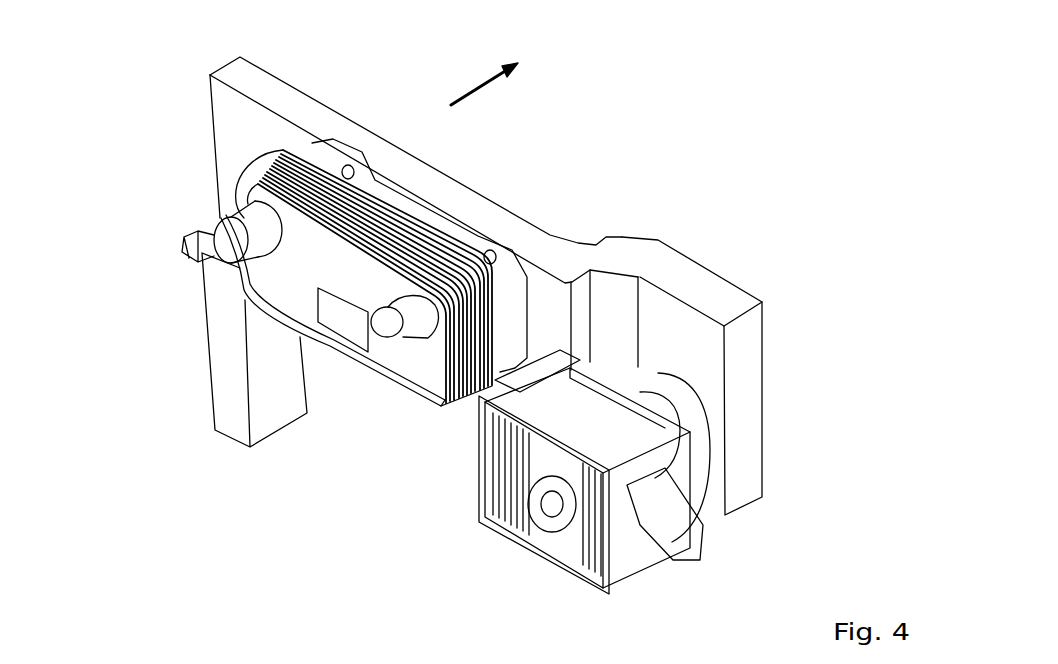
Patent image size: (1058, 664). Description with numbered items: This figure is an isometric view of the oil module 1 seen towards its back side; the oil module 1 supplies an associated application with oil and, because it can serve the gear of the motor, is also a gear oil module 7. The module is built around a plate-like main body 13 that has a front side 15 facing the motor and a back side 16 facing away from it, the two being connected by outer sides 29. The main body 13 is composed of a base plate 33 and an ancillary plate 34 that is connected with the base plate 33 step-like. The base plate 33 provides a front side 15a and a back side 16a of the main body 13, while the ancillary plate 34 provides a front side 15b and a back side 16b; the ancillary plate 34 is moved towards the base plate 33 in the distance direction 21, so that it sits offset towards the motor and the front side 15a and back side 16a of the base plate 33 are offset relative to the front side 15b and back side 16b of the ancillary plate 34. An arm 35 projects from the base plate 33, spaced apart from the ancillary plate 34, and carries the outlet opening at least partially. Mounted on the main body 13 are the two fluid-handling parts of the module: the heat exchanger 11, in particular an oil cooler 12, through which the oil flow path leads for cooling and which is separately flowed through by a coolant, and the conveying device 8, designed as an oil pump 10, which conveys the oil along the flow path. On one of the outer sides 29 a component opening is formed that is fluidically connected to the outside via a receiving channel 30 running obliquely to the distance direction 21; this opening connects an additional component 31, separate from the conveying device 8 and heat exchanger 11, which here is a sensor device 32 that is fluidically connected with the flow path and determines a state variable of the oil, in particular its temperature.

The oil module 1 is at (465, 322).
The gear oil module 7 is at (636, 149).
The conveying device 8 is at (578, 497).
The oil pump 10 is at (530, 553).
The heat exchanger 11 is at (289, 309).
The oil cooler 12 is at (289, 309).
The main body 13 is at (697, 263).
The front side 15 is at (468, 260).
The front side of the base plate 15a is at (347, 144).
The front side of the ancillary plate 15b is at (725, 351).
The back side 16 is at (377, 150).
The back side of the base plate 16a is at (347, 144).
The back side of the ancillary plate 16b is at (725, 351).
The distance direction 21 is at (470, 80).
The outer sides 29 is at (468, 260).
The receiving channel 30 is at (167, 222).
The additional component 31 is at (167, 222).
The sensor device 32 is at (183, 255).
The base plate 33 is at (233, 113).
The ancillary plate 34 is at (725, 351).
The arm 35 is at (283, 378).